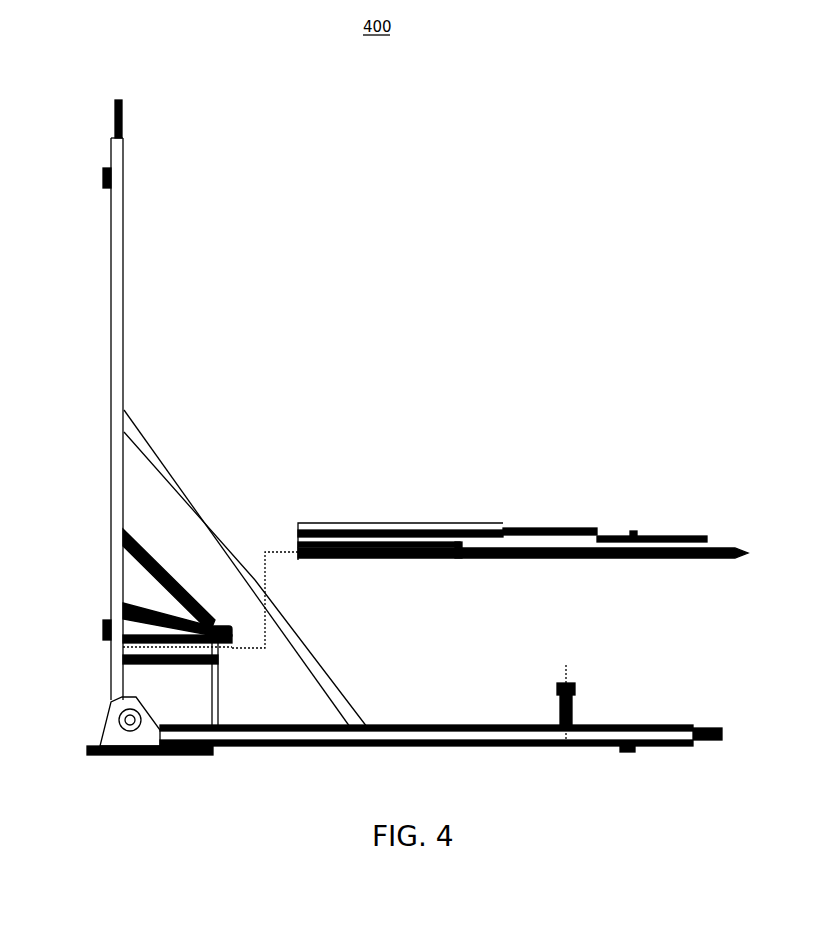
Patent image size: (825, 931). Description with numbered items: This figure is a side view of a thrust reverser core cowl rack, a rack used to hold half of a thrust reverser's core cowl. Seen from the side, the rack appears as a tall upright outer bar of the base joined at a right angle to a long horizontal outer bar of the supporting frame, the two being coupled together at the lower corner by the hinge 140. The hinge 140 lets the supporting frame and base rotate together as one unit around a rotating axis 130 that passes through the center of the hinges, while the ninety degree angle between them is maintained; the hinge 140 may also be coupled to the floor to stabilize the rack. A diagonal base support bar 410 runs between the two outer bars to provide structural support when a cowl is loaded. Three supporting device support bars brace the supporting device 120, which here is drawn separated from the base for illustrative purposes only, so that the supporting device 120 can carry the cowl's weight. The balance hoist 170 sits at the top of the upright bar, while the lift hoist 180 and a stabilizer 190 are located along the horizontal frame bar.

The supporting device 120 is at (558, 530).
The rotating axis 130 is at (130, 715).
The hinge 140 is at (130, 755).
The balance hoist 170 is at (118, 100).
The lift hoist 180 is at (722, 733).
The stabilizer 190 is at (572, 685).
The base support bar 410 is at (168, 468).